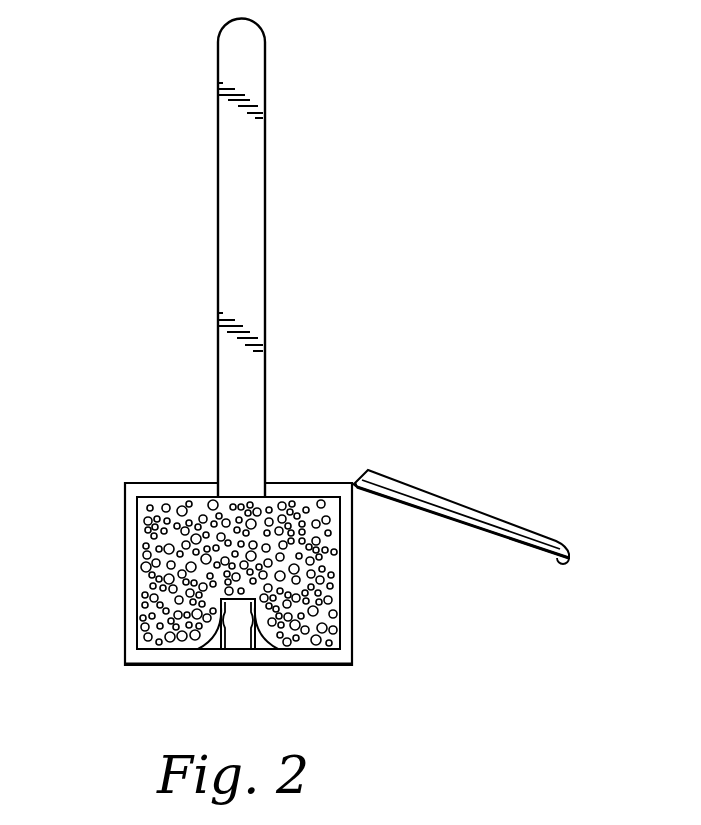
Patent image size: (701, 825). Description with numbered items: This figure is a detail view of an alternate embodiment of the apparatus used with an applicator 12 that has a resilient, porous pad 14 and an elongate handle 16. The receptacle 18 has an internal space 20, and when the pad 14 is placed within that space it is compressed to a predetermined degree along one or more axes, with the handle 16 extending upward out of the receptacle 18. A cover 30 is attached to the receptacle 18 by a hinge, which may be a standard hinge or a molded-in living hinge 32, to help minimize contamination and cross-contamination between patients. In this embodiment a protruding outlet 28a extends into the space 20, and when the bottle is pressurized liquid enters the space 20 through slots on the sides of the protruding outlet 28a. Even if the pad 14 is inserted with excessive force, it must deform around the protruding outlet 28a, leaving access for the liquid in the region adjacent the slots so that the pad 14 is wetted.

The applicator 12 is at (225, 257).
The resilient, porous pad 14 is at (147, 552).
The elongate handle 16 is at (250, 165).
The receptacle 18 is at (122, 623).
The internal space 20 is at (140, 540).
The protruding outlet 28a is at (236, 596).
The cover 30 is at (477, 530).
The living hinge 32 is at (356, 482).